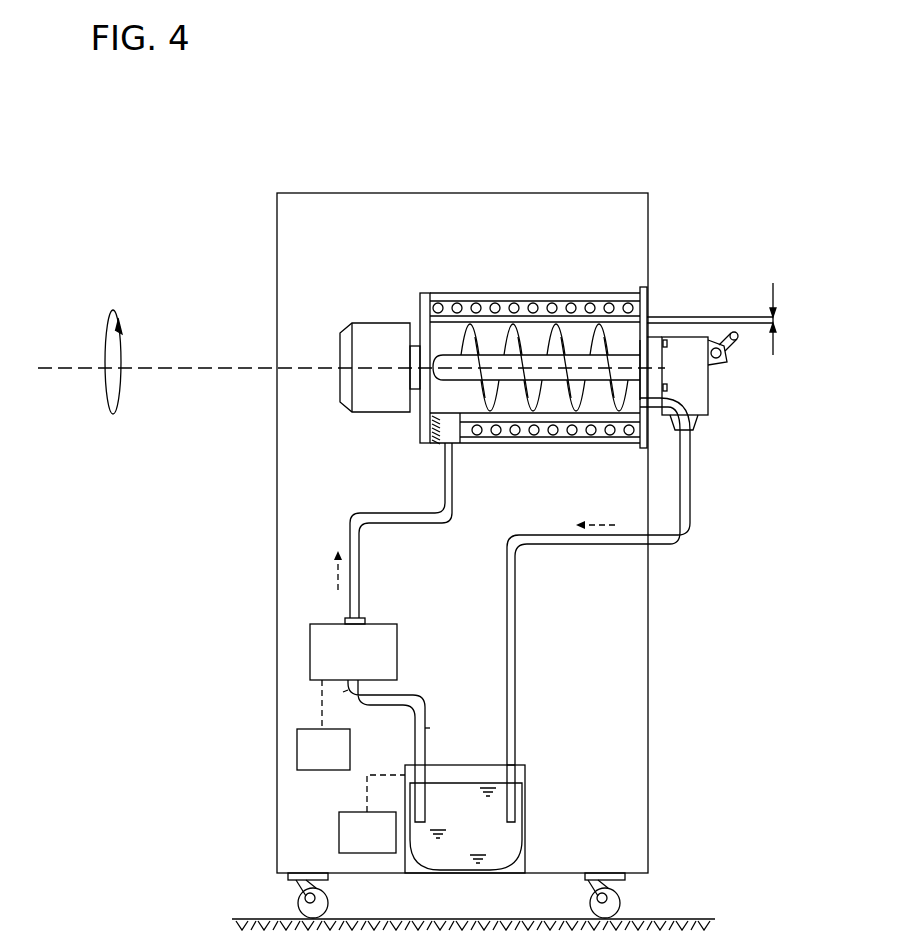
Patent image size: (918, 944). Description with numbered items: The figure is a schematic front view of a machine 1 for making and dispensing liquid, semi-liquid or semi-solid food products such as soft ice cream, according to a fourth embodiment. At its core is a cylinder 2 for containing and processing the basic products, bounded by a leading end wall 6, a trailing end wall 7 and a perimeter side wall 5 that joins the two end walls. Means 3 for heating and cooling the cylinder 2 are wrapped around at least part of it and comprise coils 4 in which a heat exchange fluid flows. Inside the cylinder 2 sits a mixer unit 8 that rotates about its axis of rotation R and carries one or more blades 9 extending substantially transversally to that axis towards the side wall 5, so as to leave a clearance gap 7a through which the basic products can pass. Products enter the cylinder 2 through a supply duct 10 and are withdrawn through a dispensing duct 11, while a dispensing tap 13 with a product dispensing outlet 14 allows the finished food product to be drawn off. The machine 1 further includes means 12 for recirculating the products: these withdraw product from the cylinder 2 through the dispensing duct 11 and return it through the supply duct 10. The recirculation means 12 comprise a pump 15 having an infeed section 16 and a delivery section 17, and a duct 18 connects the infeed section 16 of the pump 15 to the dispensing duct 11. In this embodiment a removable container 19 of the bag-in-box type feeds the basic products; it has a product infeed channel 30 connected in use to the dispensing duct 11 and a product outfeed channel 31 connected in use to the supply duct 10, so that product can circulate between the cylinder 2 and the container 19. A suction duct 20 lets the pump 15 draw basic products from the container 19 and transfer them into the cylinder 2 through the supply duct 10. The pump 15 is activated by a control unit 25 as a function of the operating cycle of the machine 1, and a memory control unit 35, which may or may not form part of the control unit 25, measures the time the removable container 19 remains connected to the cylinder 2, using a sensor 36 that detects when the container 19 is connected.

The machine 1 is at (703, 173).
The cylinder 2 is at (419, 312).
The means for heating and cooling the cylinder 3 is at (503, 325).
The coils 4 is at (549, 304).
The perimeter side wall 5 is at (450, 388).
The leading end wall 6 is at (640, 337).
The trailing end wall 7 is at (437, 400).
The clearance gap 7a is at (726, 316).
The mixer unit 8 is at (455, 350).
The blades 9 is at (583, 333).
The supply duct 10 is at (330, 537).
The dispensing duct 11 is at (702, 388).
The means for recirculating the products 12 is at (577, 548).
The dispensing tap 13 is at (658, 400).
The product dispensing outlet 14 is at (687, 437).
The pump 15 is at (366, 666).
The infeed section 16 is at (405, 758).
The delivery section 17 is at (345, 620).
The duct 18 is at (655, 548).
The removable container 19 is at (478, 827).
The suction duct 20 is at (430, 728).
The control unit 25 is at (310, 762).
The product infeed channel 30 is at (512, 763).
The product outfeed channel 31 is at (343, 692).
The memory control unit 35 is at (354, 845).
The sensor 36 is at (400, 783).
The axis of rotation R is at (92, 367).